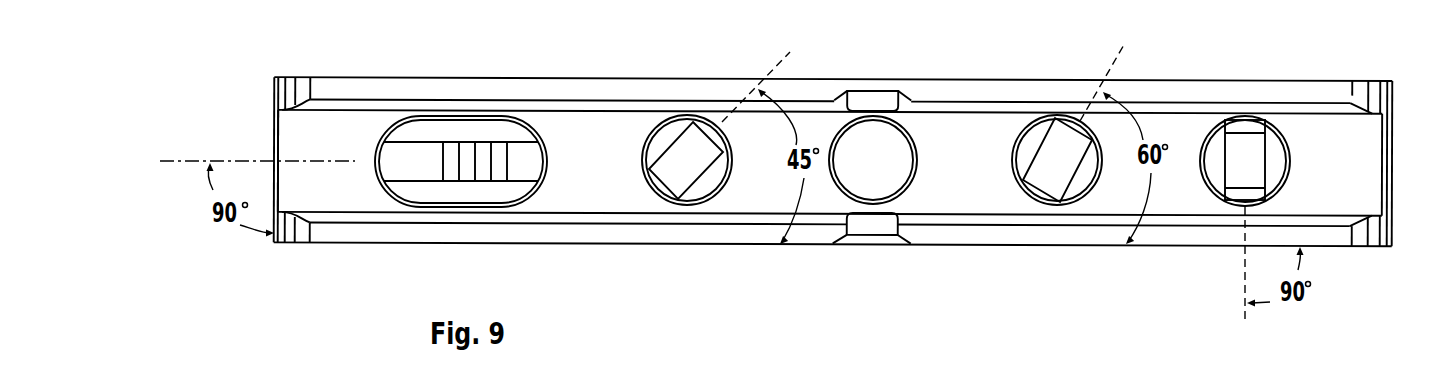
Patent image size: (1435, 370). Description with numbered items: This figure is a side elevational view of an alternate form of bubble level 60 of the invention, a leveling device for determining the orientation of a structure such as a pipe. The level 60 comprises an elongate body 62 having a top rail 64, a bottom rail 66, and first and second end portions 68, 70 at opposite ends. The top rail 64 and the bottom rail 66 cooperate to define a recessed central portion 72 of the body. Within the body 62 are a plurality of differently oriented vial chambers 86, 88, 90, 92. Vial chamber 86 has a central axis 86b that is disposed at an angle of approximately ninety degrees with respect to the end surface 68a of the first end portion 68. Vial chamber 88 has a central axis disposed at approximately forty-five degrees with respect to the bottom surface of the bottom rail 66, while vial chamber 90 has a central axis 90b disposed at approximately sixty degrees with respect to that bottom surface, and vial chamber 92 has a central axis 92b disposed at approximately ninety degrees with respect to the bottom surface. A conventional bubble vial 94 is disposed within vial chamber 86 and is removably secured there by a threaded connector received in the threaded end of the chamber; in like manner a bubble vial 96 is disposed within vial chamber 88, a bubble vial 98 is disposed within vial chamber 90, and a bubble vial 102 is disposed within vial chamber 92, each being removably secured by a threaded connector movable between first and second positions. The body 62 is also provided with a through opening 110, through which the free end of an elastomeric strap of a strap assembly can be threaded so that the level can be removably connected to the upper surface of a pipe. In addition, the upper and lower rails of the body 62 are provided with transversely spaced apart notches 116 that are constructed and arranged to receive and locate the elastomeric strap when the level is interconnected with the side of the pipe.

The bubble level 60 is at (979, 61).
The elongate body 62 is at (1034, 82).
The top rail 64 is at (1222, 82).
The bottom rail 66 is at (1069, 249).
The first end portion 68 is at (290, 78).
The end surface 68a is at (274, 115).
The second end portion 70 is at (1381, 81).
The recessed central portion 72 is at (955, 154).
The vial chamber 86 is at (430, 128).
The central axis 86b is at (184, 160).
The vial chamber 88 is at (713, 173).
The vial chamber 90 is at (1088, 177).
The central axis 90b is at (1121, 60).
The vial chamber 92 is at (1273, 148).
The central axis 92b is at (1245, 280).
The bubble vial 94 is at (497, 182).
The bubble vial 96 is at (660, 152).
The bubble vial 98 is at (1042, 145).
The bubble vial 102 is at (1229, 177).
The through opening 110 is at (880, 158).
The notches 116 is at (862, 83).